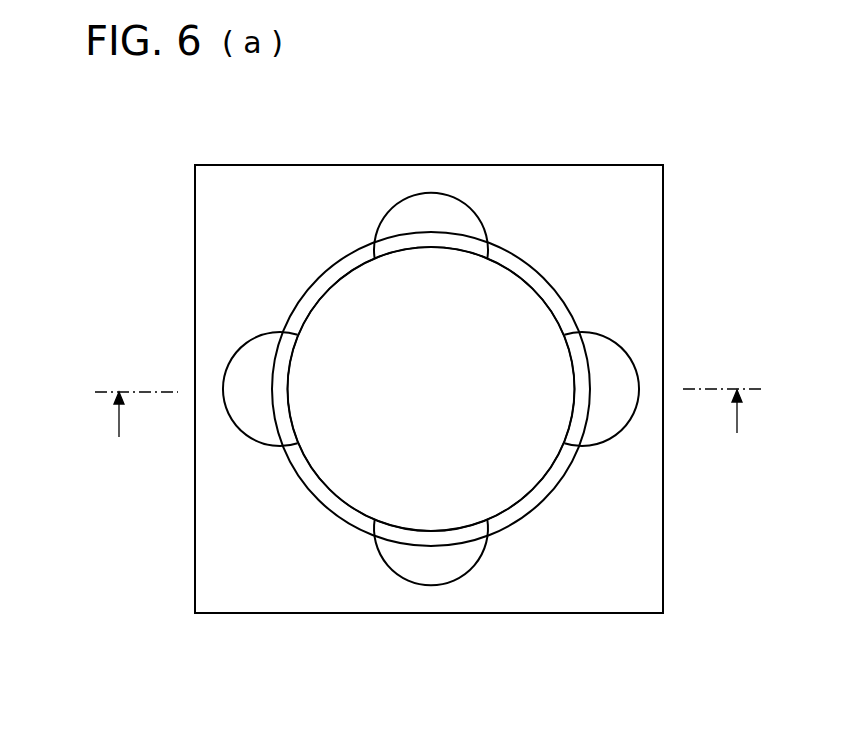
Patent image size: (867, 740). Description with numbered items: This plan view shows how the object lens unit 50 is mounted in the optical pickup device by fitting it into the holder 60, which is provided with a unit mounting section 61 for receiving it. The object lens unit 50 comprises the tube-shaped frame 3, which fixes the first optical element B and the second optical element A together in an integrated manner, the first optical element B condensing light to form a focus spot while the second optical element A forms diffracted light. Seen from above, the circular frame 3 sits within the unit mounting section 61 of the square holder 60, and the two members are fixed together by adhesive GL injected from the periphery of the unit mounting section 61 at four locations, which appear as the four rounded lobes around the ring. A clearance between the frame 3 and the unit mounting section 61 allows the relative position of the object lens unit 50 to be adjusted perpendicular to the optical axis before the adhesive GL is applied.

The holder 60 is at (663, 490).
The unit mounting section 61 is at (566, 283).
The tube-shaped frame 3 is at (528, 515).
The adhesive GL is at (430, 193).
The first optical element B is at (543, 482).
The object lens unit 50 is at (500, 209).
The second optical element A is at (430, 430).